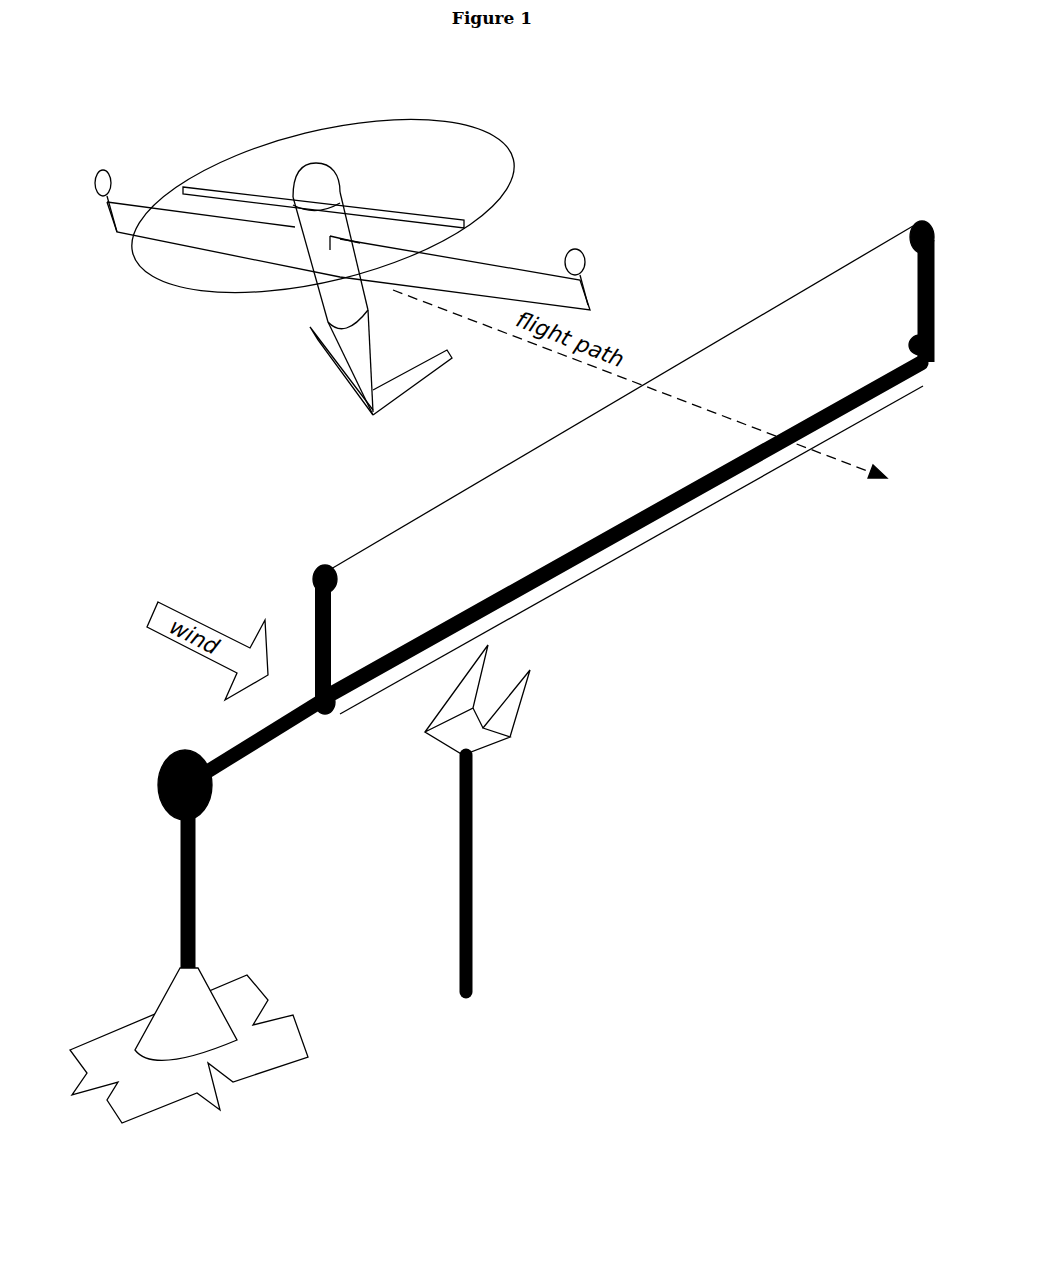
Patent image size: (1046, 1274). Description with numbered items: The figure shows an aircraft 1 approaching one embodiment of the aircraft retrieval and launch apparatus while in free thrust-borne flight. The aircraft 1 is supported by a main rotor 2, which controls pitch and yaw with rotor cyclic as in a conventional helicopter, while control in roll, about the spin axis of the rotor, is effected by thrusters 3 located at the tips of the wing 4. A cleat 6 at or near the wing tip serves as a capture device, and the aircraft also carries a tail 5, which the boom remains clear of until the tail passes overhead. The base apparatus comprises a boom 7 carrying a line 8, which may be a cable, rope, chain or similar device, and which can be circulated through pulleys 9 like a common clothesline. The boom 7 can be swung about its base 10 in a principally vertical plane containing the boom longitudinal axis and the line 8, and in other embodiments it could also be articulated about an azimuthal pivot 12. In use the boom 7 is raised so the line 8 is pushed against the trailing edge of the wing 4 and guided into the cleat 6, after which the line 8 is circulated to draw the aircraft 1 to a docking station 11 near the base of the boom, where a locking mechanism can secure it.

The aircraft 1 is at (302, 306).
The main rotor 2 is at (189, 174).
The thrusters 3 is at (95, 154).
The wing 4 is at (516, 273).
The tail 5 is at (328, 386).
The cleat 6 is at (108, 244).
The boom 7 is at (274, 755).
The line 8 is at (418, 529).
The pulleys 9 is at (903, 219).
The base 10 is at (159, 742).
The docking station 11 is at (544, 696).
The azimuthal pivot 12 is at (167, 959).